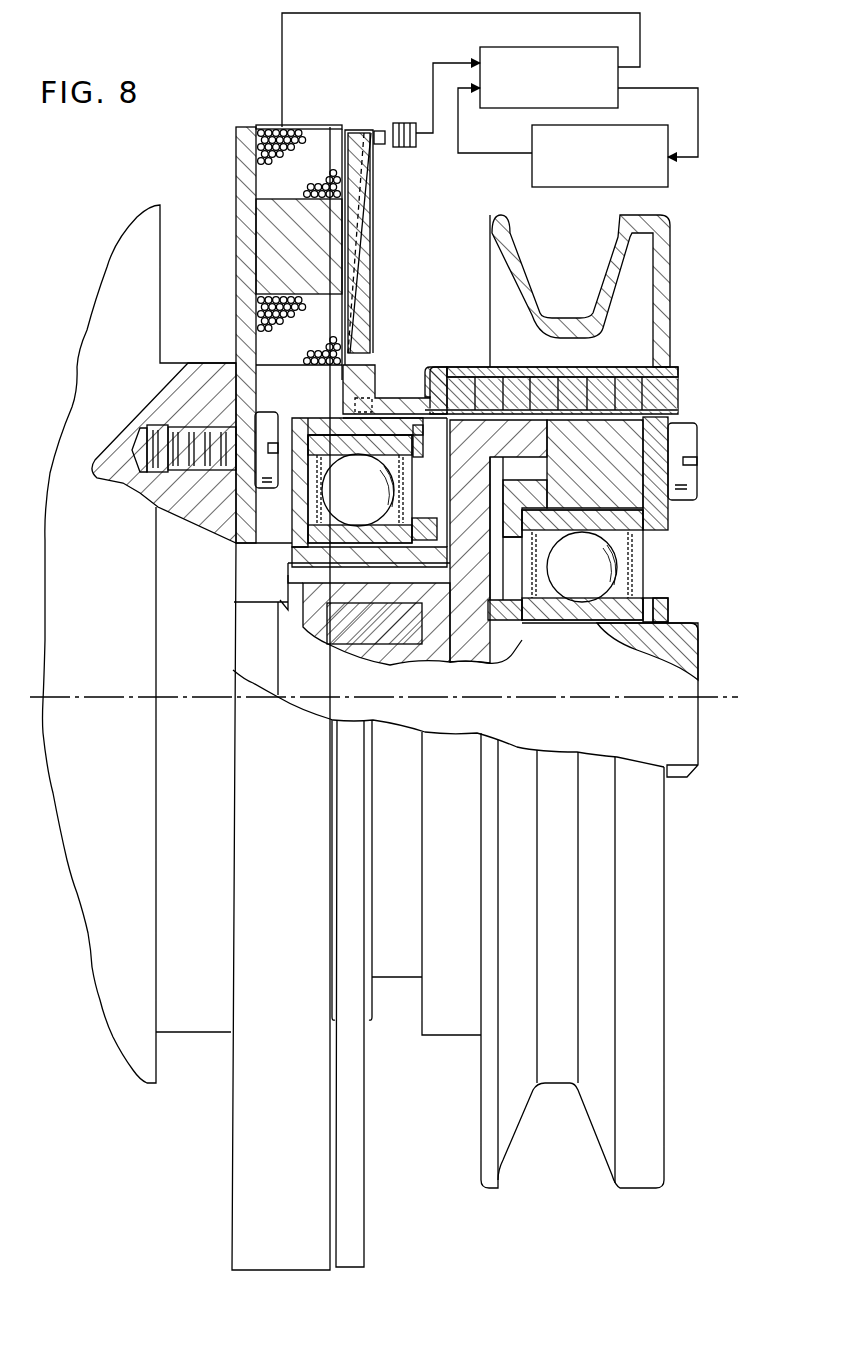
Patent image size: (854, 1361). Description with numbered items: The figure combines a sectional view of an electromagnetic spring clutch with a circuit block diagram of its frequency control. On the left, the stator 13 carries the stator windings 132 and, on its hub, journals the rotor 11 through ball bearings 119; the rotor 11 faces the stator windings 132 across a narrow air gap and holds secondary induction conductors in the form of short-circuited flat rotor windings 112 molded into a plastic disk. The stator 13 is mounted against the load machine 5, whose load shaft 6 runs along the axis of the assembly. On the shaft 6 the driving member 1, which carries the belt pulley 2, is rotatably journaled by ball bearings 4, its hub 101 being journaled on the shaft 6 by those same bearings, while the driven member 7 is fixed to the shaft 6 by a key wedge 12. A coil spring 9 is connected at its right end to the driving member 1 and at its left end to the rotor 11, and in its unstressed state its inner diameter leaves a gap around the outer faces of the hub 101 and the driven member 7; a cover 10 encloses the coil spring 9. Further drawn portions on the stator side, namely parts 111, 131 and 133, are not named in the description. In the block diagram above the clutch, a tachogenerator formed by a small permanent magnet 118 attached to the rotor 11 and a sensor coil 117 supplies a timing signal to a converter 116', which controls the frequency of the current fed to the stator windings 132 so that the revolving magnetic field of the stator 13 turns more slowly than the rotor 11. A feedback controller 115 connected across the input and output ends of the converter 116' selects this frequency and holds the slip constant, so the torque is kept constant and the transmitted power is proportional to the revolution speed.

The driving member 1 is at (668, 422).
The belt pulley 2 is at (520, 237).
The ball bearings 4 is at (608, 565).
The load machine 5 is at (167, 905).
The load shaft 6 is at (670, 720).
The driven member 7 is at (470, 607).
The coil spring 9 is at (465, 382).
The cover 10 is at (620, 430).
The rotor 11 is at (363, 130).
The key wedge 12 is at (408, 637).
The stator 13 is at (240, 160).
The hub of the driving member 101 is at (670, 523).
The bracket 111 is at (375, 365).
The rotor winding 112 is at (365, 228).
The feedback controller 115 is at (633, 125).
The converter 116' is at (549, 66).
The sensor coil 117 is at (403, 123).
The small permanent magnet 118 is at (379, 131).
The ball bearings 119 is at (323, 510).
The ball chamber 131 is at (262, 127).
The stator windings 132 is at (305, 127).
The partition 133 is at (268, 236).